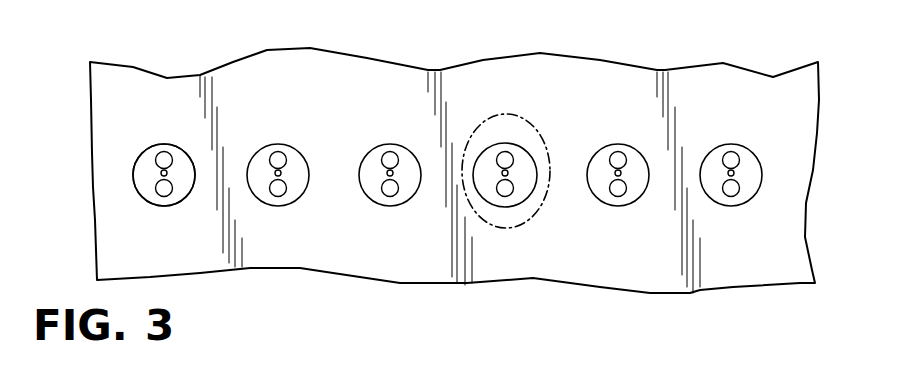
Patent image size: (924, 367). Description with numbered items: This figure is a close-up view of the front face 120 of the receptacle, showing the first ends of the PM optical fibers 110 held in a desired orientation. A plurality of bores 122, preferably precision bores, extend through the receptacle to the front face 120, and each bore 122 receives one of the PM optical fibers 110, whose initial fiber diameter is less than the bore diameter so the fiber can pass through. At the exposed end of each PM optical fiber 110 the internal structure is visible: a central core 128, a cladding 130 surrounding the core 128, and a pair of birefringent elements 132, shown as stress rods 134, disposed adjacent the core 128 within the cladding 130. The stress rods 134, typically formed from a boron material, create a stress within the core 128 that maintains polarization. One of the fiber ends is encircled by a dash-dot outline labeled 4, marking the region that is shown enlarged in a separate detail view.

The detail region shown in FIG. 4 is at (507, 228).
The PM optical fiber 110 is at (147, 172).
The front face 120 is at (729, 117).
The bore 122 is at (276, 150).
The core 128 is at (170, 167).
The cladding 130 is at (182, 182).
The birefringent elements 132 is at (290, 152).
The stress rods 134 is at (157, 152).